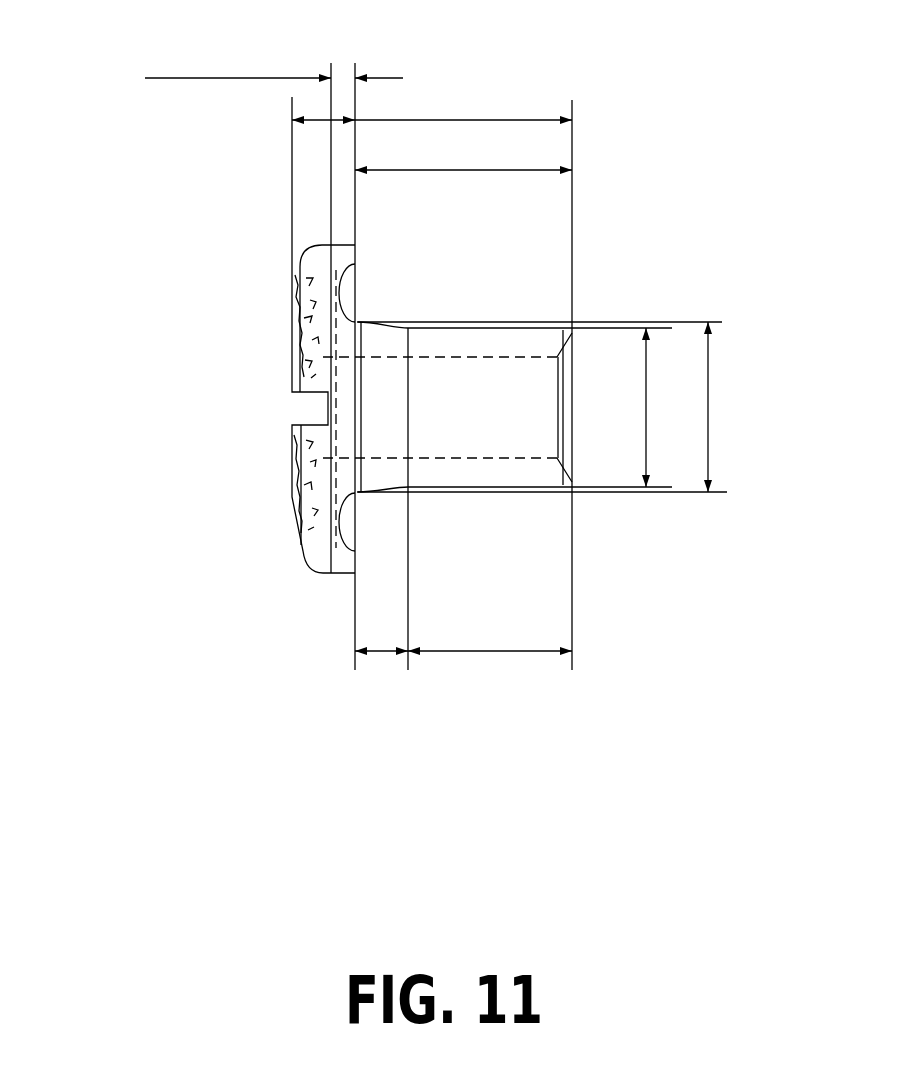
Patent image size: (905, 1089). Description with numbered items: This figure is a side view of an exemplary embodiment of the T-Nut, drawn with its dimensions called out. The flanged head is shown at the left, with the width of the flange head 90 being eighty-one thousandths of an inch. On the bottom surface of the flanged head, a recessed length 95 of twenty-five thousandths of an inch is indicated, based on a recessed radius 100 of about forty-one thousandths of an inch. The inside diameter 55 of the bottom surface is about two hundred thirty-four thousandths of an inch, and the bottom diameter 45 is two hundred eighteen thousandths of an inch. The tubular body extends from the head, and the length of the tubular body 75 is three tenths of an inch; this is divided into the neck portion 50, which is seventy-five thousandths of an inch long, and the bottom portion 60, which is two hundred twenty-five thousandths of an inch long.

The recessed radius 100 is at (375, 294).
The recessed length 95 is at (262, 78).
The width of the flange head 90 is at (330, 121).
The length of the tubular body 75 is at (433, 170).
The inside diameter of the bottom surface 55 is at (710, 380).
The bottom diameter 45 is at (648, 460).
The neck portion 50 is at (380, 651).
The bottom portion 60 is at (487, 651).